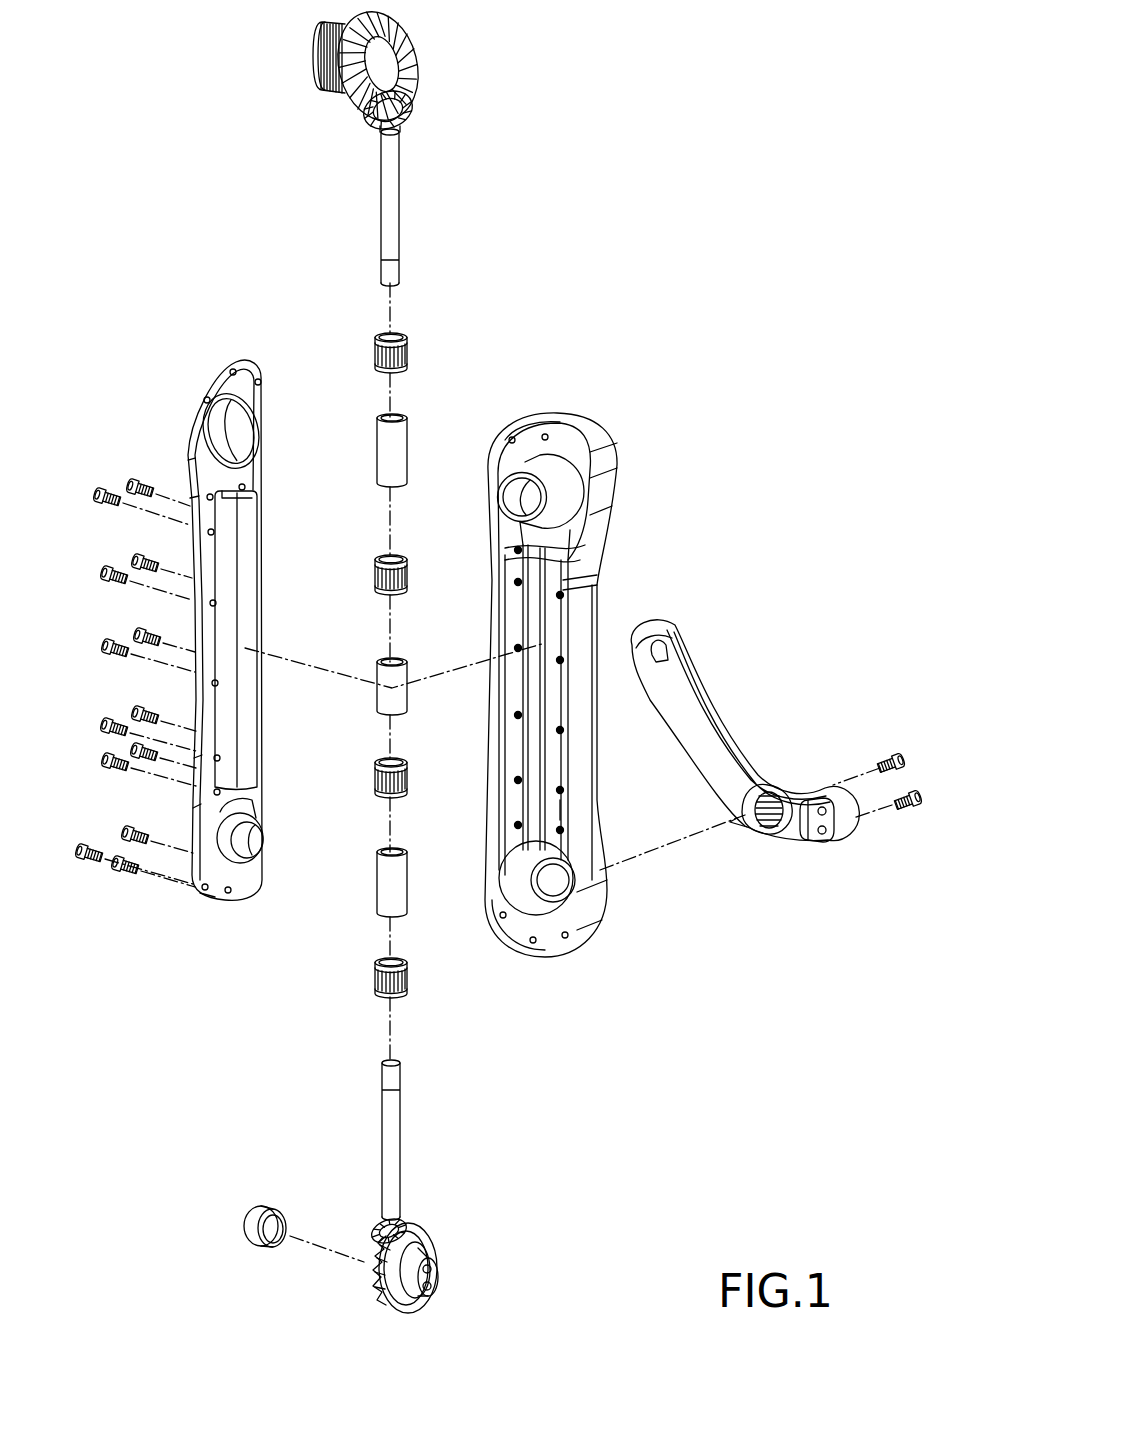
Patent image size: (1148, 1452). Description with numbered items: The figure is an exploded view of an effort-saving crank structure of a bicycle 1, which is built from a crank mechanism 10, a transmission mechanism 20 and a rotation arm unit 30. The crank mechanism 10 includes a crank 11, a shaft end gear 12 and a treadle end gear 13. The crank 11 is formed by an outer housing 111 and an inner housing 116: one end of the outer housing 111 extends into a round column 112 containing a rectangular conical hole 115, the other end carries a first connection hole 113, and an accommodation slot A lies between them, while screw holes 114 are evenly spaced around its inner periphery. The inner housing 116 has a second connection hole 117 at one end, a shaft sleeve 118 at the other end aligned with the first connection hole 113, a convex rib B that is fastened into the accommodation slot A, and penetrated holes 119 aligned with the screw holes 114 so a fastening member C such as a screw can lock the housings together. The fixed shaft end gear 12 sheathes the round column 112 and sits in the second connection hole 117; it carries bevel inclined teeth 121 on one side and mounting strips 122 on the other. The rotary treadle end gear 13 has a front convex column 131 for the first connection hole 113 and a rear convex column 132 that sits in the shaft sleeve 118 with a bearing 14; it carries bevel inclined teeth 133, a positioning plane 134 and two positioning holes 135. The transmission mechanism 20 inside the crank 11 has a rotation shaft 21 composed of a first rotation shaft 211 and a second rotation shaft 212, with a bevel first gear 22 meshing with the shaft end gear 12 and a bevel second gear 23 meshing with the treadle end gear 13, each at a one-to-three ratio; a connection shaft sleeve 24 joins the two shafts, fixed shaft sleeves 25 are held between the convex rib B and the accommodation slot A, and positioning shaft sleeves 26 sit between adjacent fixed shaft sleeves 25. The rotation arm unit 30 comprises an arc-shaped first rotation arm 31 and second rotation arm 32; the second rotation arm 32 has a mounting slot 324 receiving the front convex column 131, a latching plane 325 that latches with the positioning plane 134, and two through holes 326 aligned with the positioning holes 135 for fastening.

The bicycle crank assembly 1 is at (681, 122).
The crank mechanism 10 is at (593, 669).
The crank 11 is at (618, 493).
The outer housing 111 is at (567, 428).
The round column 112 is at (543, 473).
The first connection hole 113 is at (563, 882).
The screw holes 114 is at (567, 808).
The rectangular conical hole 115 is at (520, 497).
The inner housing 116 is at (213, 375).
The second connection hole 117 is at (228, 425).
The shaft sleeve 118 is at (266, 842).
The penetrated holes 119 is at (208, 898).
The shaft end gear 12 is at (398, 66).
The bevel inclined teeth 121 is at (413, 45).
The mounting strips 122 is at (318, 45).
The treadle end gear 13 is at (390, 1230).
The front convex column 131 is at (417, 1262).
The rear convex column 132 is at (370, 1268).
The bevel inclined teeth 133 is at (375, 1292).
The positioning plane 134 is at (436, 1284).
The positioning holes 135 is at (432, 1270).
The bearing 14 is at (262, 1206).
The transmission mechanism 20 is at (248, 1024).
The rotation shaft 21 is at (373, 666).
The first rotation shaft 211 is at (393, 210).
The second rotation shaft 212 is at (398, 1120).
The first gear 22 is at (412, 110).
The second gear 23 is at (372, 1227).
The connection shaft sleeve 24 is at (397, 703).
The fixed shaft sleeves 25 is at (398, 773).
The positioning shaft sleeves 26 is at (398, 880).
The rotation arm unit 30 is at (765, 754).
The first rotation arm 31 is at (657, 700).
The second rotation arm 32 is at (693, 702).
The mounting slot 324 is at (807, 840).
The latching plane 325 is at (826, 820).
The through holes 326 is at (818, 838).
The accommodation slot A is at (547, 624).
The convex rib B is at (258, 613).
The fastening member C is at (103, 494).